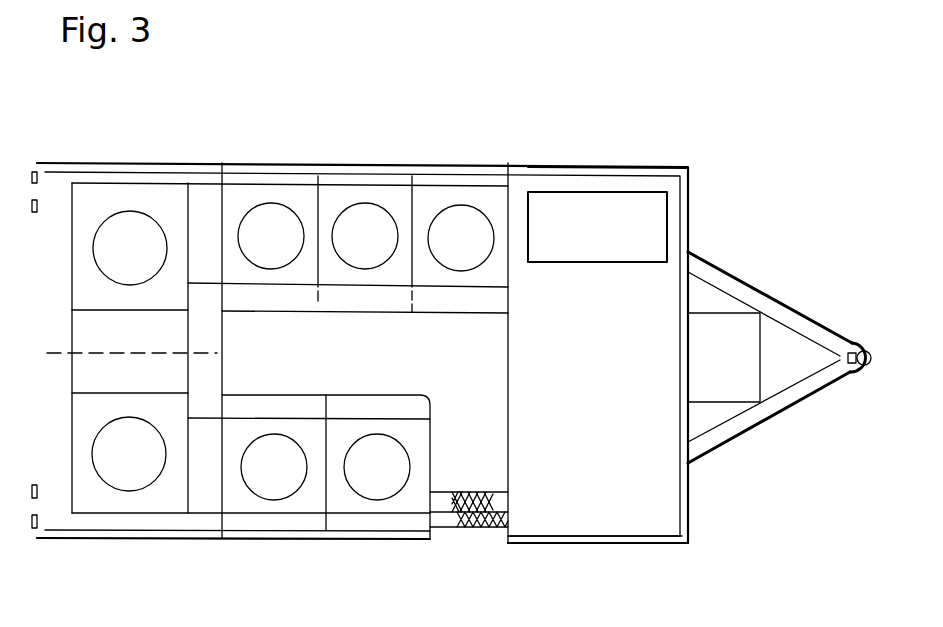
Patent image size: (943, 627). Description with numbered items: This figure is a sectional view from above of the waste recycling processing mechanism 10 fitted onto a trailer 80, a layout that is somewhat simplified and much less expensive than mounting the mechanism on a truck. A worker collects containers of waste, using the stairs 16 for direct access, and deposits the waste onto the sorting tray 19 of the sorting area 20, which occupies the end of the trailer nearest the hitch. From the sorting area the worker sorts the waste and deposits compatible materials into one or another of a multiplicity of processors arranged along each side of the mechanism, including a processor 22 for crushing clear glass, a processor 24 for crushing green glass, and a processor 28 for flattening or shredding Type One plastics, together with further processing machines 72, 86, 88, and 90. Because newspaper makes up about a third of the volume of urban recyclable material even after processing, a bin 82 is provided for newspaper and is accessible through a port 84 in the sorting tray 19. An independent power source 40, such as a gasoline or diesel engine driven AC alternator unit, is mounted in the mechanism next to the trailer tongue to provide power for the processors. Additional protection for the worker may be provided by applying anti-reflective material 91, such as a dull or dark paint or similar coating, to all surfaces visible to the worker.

The waste recycling processing mechanism 10 is at (212, 163).
The bin 72 is at (140, 212).
The processor 28 is at (118, 488).
The processing machine 86 is at (293, 207).
The processing machine 88 is at (380, 207).
The processing machine 90 is at (480, 207).
The processor 24 is at (262, 498).
The processor 22 is at (360, 498).
The bin 82 is at (590, 165).
The port 84 is at (620, 192).
The sorting area 20 is at (620, 307).
The sorting tray 19 is at (585, 477).
The anti-reflective material 91 is at (633, 523).
The trailer 80 is at (760, 285).
The independent power source 40 is at (760, 370).
The stairs 16 is at (453, 530).